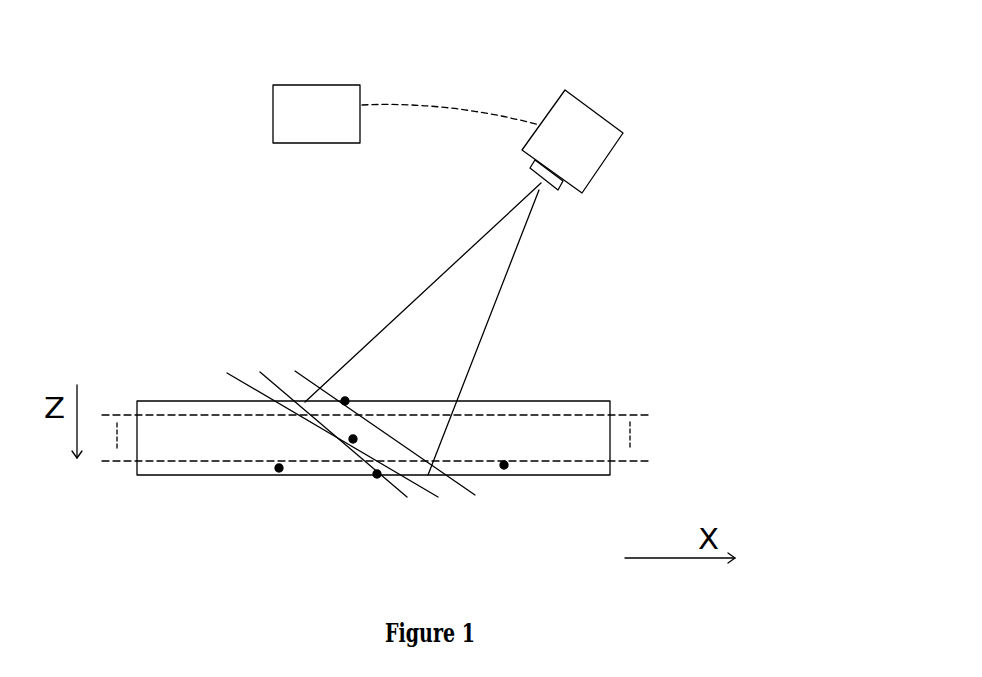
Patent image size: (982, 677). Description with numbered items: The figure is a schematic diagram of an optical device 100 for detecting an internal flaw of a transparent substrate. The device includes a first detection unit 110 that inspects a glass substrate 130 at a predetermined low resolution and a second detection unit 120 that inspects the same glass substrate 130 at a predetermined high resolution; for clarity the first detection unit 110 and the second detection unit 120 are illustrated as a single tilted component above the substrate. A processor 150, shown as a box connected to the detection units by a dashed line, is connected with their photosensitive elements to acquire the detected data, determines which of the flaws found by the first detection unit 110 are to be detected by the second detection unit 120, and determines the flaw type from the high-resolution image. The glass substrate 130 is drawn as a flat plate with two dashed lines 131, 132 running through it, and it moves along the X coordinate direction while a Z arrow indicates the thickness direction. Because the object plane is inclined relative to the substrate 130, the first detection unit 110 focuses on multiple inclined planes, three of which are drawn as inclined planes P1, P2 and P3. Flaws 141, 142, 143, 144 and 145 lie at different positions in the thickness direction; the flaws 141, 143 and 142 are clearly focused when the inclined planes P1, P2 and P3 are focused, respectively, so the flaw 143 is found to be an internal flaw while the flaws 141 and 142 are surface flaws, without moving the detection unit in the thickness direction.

The optical device 100 is at (183, 115).
The first detection unit 110 is at (580, 130).
The second detection unit 120 is at (663, 109).
The processor 150 is at (342, 128).
The glass substrate 130 is at (597, 450).
The first surface of substrate 131 is at (627, 415).
The second surface of substrate 132 is at (632, 458).
The flaw 141 is at (377, 372).
The flaw 142 is at (377, 474).
The flaw 143 is at (353, 439).
The flaw 144 is at (279, 468).
The flaw 145 is at (504, 465).
The inclined plane P1 is at (397, 448).
The inclined plane P2 is at (342, 449).
The inclined plane P3 is at (339, 448).